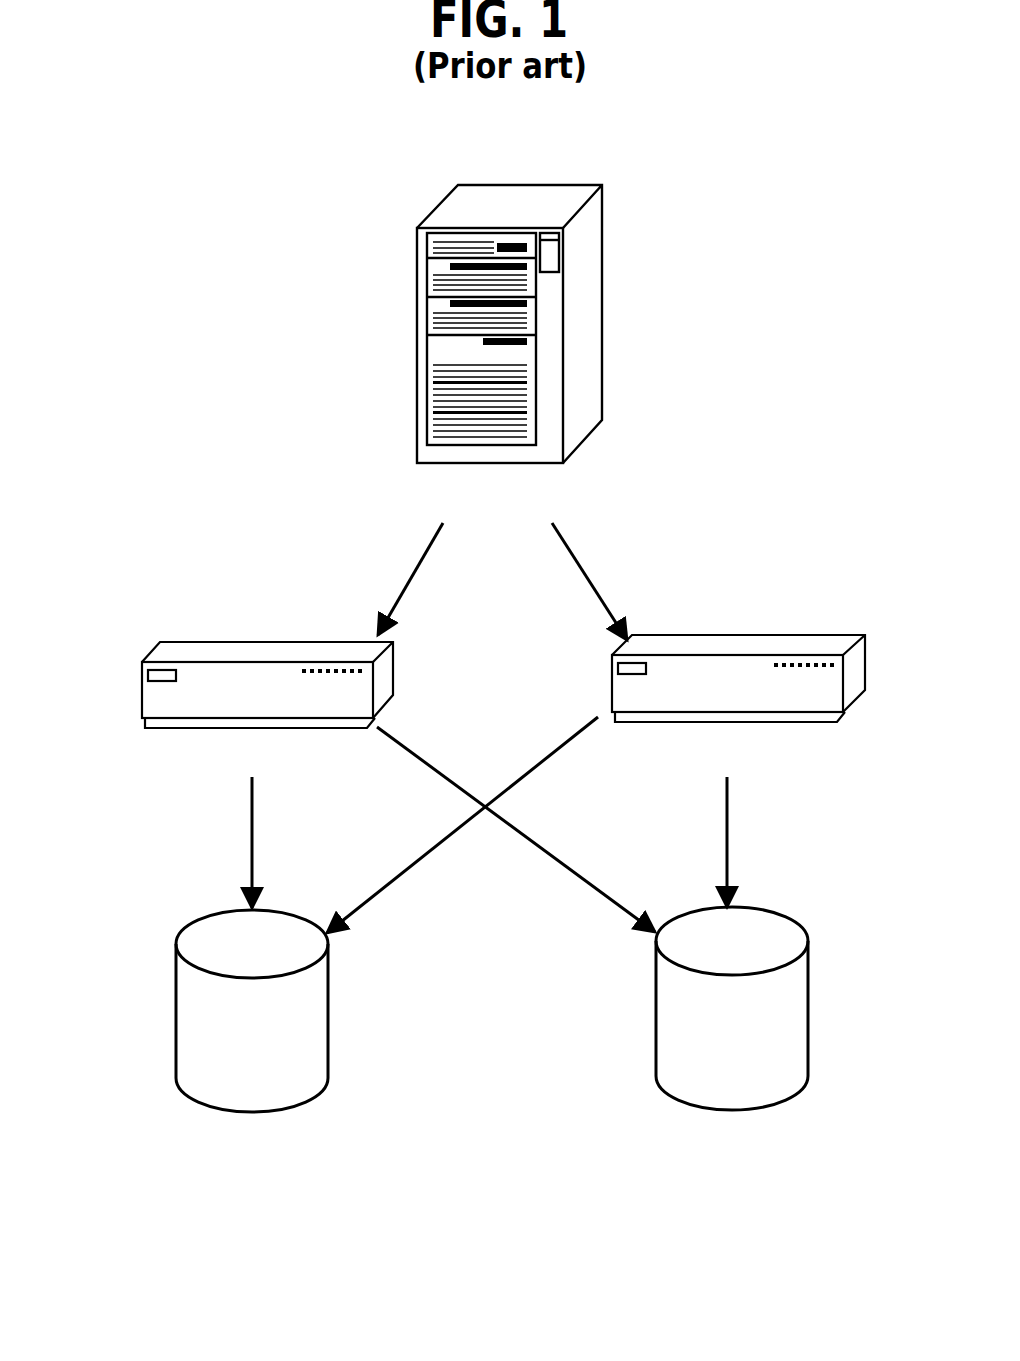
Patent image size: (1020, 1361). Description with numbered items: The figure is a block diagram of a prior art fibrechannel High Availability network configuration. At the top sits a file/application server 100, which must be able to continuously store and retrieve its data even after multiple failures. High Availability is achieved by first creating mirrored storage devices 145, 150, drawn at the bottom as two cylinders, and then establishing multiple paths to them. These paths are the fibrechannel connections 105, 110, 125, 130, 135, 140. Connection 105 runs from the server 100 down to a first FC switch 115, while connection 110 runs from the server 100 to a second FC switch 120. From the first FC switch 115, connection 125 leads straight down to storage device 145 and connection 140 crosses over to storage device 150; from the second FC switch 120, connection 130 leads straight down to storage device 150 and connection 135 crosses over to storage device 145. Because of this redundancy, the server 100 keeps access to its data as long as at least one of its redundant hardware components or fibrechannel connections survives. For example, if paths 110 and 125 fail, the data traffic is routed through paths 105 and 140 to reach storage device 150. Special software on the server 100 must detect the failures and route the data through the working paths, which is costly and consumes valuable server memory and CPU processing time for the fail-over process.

The server 100 is at (415, 248).
The fibrechannel connection 105 is at (415, 567).
The fibrechannel connection 110 is at (583, 575).
The FC switch 115 is at (143, 720).
The FC switch 120 is at (837, 720).
The fibrechannel connection 125 is at (248, 825).
The fibrechannel connection 130 is at (730, 820).
The fibrechannel connection 135 is at (407, 873).
The fibrechannel connection 140 is at (578, 875).
The storage device 145 is at (330, 1008).
The storage device 150 is at (808, 1004).